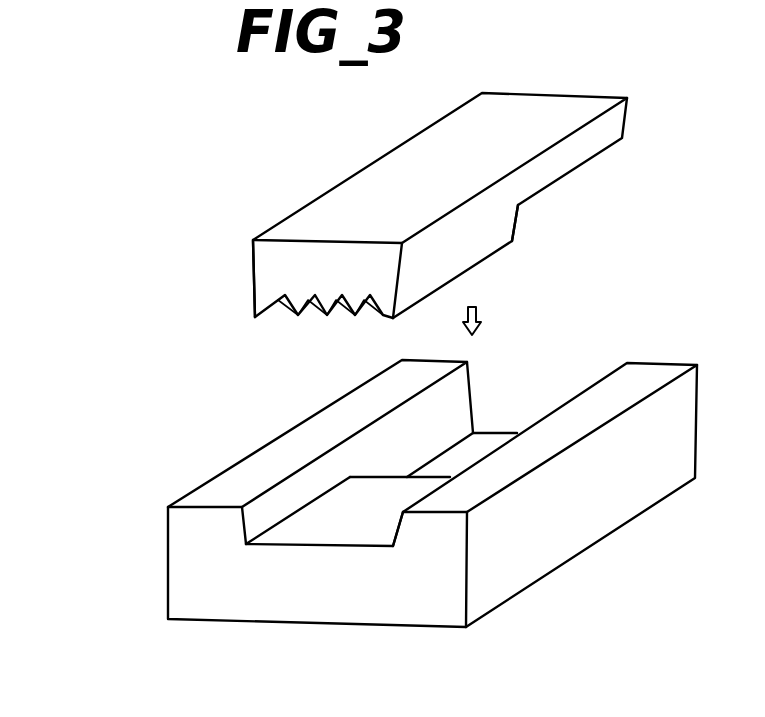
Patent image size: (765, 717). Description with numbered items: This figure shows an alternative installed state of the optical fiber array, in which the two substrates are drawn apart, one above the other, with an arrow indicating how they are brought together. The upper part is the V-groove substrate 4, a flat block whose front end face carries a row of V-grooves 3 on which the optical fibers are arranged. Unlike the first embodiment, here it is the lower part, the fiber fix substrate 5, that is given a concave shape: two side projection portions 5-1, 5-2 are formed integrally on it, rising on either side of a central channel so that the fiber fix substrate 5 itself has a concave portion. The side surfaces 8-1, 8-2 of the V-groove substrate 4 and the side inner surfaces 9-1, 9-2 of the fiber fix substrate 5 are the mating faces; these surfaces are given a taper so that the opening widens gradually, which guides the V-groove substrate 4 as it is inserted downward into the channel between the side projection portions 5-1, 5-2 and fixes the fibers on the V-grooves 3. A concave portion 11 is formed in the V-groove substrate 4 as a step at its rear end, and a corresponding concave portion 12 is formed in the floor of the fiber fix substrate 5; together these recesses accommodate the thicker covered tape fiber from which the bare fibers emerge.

The V-groove substrate 4 is at (428, 133).
The V-grooves 3 is at (272, 312).
The side surface of V-groove substrate 8-1 is at (252, 262).
The side surface of V-groove substrate 8-2 is at (475, 242).
The concave portion 11 is at (515, 222).
The fiber fix substrate 5 is at (325, 597).
The side projection portion 5-1 is at (177, 523).
The side projection portion 5-2 is at (427, 528).
The side inner surface of fiber fix substrate 9-1 is at (245, 513).
The side inner surface of fiber fix substrate 9-2 is at (398, 520).
The concave portion 12 is at (493, 437).